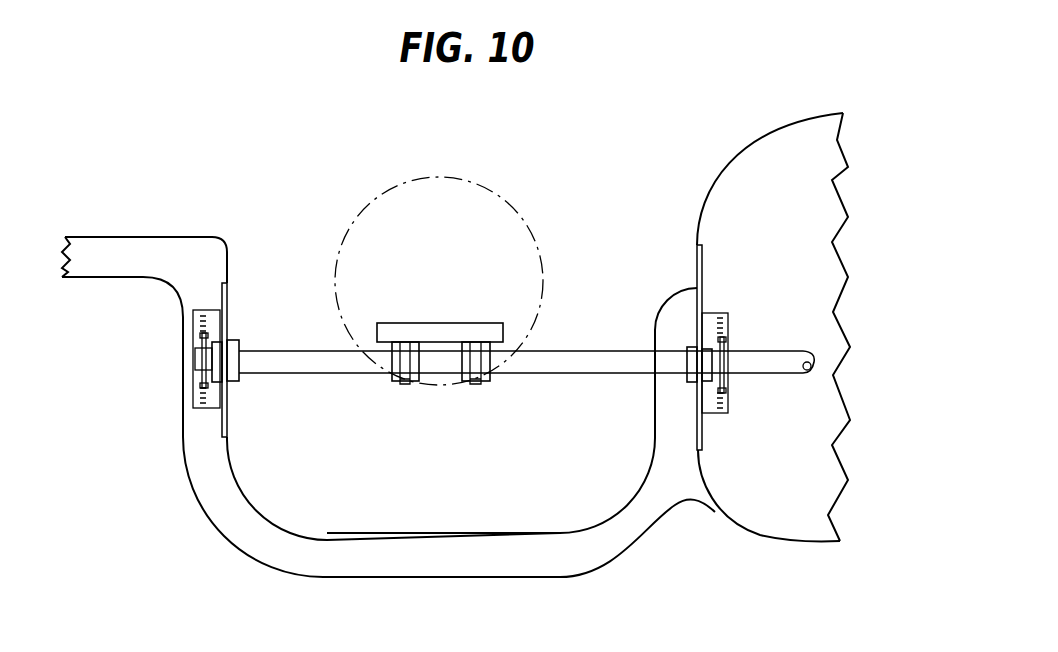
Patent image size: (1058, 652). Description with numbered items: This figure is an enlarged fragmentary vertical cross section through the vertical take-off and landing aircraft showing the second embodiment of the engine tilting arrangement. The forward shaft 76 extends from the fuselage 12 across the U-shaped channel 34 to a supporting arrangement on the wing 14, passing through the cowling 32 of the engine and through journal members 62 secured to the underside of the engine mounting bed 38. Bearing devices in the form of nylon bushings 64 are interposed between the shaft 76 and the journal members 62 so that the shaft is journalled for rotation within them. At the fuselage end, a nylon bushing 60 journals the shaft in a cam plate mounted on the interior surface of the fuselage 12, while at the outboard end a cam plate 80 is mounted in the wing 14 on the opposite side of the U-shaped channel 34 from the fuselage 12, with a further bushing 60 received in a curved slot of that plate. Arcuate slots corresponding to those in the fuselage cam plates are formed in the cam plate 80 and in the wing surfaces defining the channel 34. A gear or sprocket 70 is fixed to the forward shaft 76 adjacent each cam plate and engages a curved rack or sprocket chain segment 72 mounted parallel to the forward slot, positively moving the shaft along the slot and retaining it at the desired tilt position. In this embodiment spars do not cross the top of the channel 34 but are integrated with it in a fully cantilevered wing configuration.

The fuselage 12 is at (760, 132).
The wing 14 is at (158, 246).
The cowling 32 is at (410, 180).
The U-shaped channel 34 is at (258, 505).
The engine mounting bed 38 is at (412, 322).
The nylon bushing 60 is at (238, 340).
The journal member 62 is at (406, 381).
The nylon bushing 64 is at (376, 372).
The gear or sprocket 70 is at (200, 382).
The curved rack or sprocket chain segment 72 is at (199, 316).
The forward shaft 76 is at (586, 374).
The cam plate 80 is at (213, 290).